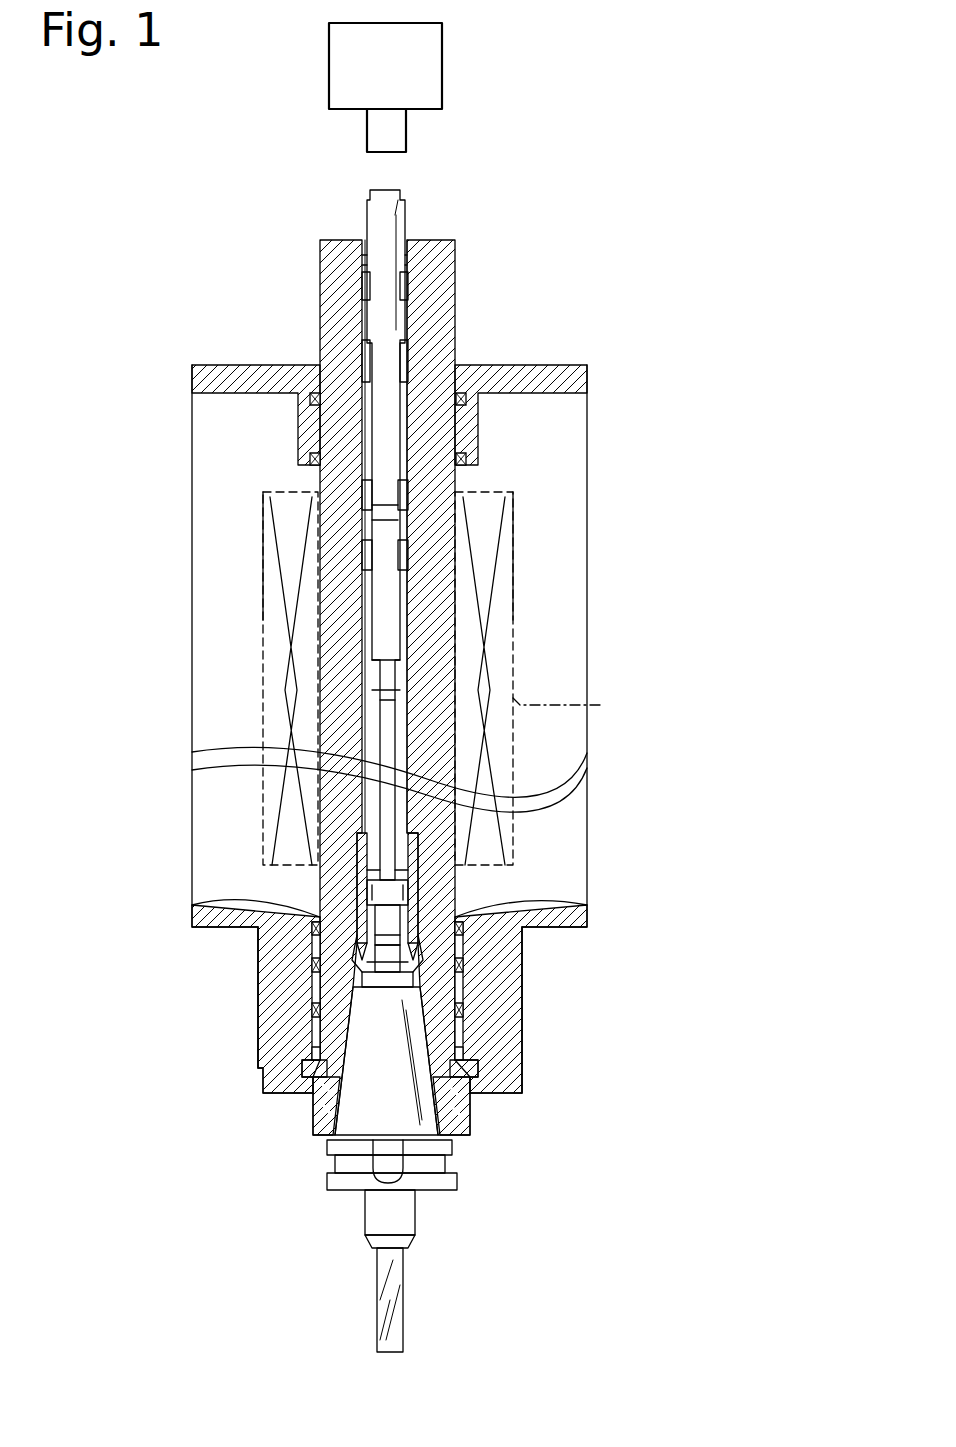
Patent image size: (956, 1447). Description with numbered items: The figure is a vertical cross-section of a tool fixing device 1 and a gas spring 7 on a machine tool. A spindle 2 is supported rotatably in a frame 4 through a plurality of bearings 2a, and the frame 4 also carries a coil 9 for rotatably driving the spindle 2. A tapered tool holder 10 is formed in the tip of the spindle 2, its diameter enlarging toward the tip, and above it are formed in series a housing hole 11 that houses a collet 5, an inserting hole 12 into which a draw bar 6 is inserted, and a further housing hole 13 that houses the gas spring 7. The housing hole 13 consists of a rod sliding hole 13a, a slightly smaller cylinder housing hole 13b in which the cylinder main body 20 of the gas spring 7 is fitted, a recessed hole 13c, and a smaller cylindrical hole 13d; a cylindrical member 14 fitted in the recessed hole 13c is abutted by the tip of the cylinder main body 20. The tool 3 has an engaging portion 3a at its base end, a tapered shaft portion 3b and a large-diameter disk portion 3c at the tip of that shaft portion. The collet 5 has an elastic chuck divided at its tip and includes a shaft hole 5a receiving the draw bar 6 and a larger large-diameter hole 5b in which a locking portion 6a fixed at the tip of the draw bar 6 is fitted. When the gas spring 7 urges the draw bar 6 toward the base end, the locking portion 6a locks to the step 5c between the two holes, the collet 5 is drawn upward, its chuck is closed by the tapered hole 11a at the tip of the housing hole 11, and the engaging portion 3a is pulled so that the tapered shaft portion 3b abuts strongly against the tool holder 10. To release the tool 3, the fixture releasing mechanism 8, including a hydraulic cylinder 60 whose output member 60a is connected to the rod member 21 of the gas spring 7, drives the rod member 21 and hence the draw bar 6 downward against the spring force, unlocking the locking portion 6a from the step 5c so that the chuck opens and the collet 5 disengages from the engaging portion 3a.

The tool fixing device 1 is at (606, 342).
The spindle 2 is at (457, 640).
The bearings 2a is at (468, 462).
The tool 3 is at (418, 1169).
The engaging portion 3a is at (423, 965).
The tapered shaft portion 3b is at (478, 1066).
The large-diameter disk portion 3c is at (328, 1182).
The frame 4 is at (587, 640).
The collet 5 is at (498, 948).
The shaft hole 5a is at (405, 828).
The large-diameter hole 5b is at (410, 880).
The step 5c is at (367, 882).
The draw bar 6 is at (396, 706).
The locking portion 6a is at (357, 905).
The gas spring 7 is at (356, 275).
The fixture releasing mechanism 8 is at (406, 81).
The coil 9 is at (567, 705).
The tool holder 10 is at (306, 1050).
The housing hole 11 is at (405, 828).
The tapered hole 11a is at (420, 960).
The inserting hole 12 is at (388, 707).
The housing hole 13 is at (234, 421).
The rod sliding hole 13a is at (368, 285).
The cylinder housing hole 13b is at (368, 377).
The recessed hole 13c is at (364, 497).
The cylindrical hole 13d is at (264, 540).
The cylindrical member 14 is at (400, 513).
The cylinder main body 20 is at (453, 293).
The rod member 21 is at (395, 205).
The hydraulic cylinder 60 is at (345, 72).
The output member 60a is at (367, 125).